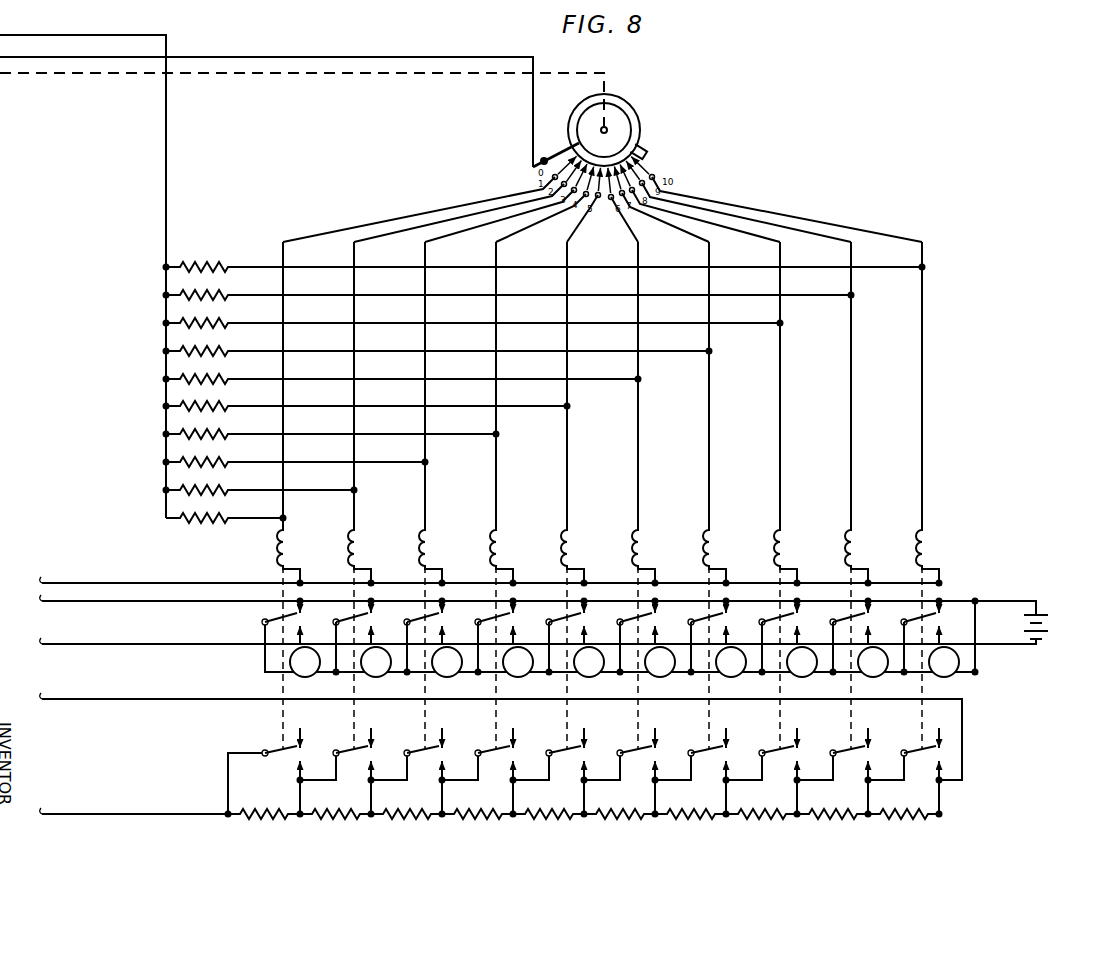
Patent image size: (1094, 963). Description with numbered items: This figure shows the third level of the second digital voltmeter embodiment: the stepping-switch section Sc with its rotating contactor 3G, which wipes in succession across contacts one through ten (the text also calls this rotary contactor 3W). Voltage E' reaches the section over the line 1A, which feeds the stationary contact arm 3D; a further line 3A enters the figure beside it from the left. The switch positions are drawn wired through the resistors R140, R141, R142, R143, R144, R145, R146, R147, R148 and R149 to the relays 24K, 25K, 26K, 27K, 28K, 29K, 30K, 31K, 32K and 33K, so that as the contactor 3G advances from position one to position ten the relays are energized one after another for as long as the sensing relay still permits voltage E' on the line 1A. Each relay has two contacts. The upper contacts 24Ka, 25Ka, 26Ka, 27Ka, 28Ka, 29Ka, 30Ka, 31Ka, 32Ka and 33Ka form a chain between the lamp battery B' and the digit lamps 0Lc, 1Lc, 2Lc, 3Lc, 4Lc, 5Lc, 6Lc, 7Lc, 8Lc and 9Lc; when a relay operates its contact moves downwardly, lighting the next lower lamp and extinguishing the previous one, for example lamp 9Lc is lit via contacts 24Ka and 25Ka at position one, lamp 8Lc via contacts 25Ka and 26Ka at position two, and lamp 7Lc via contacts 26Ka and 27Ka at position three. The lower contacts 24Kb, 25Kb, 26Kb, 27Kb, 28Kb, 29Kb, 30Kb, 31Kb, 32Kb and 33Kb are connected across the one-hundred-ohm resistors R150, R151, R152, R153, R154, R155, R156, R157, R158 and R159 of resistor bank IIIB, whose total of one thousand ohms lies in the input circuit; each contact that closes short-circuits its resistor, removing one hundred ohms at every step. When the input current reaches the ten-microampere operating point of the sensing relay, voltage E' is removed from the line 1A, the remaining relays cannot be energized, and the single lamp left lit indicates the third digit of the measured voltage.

The supply line 3A is at (159, 35).
The line 1A is at (301, 58).
The rotating contactor 3G is at (587, 103).
The switch section Sc is at (620, 96).
The rotary contactor 3W is at (640, 125).
The stationary contact arm 3D is at (564, 149).
The resistor R140 is at (544, 260).
The resistor R141 is at (509, 288).
The resistor R142 is at (473, 316).
The resistor R143 is at (438, 344).
The resistor R144 is at (402, 372).
The resistor R145 is at (367, 399).
The resistor R146 is at (331, 427).
The resistor R147 is at (296, 455).
The resistor R148 is at (260, 483).
The resistor R149 is at (226, 511).
The relay 24K is at (288, 531).
The relay 25K is at (359, 531).
The relay 26K is at (430, 531).
The relay 27K is at (501, 531).
The relay 28K is at (572, 531).
The relay 29K is at (643, 531).
The relay 30K is at (714, 531).
The relay 31K is at (785, 531).
The relay 32K is at (856, 531).
The relay 33K is at (927, 531).
The relay contact 24Ka is at (281, 611).
The relay contact 25Ka is at (365, 611).
The relay contact 26Ka is at (436, 611).
The relay contact 27Ka is at (507, 611).
The relay contact 28Ka is at (578, 611).
The relay contact 29Ka is at (649, 611).
The relay contact 30Ka is at (720, 611).
The relay contact 31Ka is at (791, 611).
The relay contact 32Ka is at (862, 611).
The relay contact 33Ka is at (933, 611).
The relay contact 24Kb is at (280, 746).
The relay contact 25Kb is at (366, 746).
The relay contact 26Kb is at (437, 746).
The relay contact 27Kb is at (508, 746).
The relay contact 28Kb is at (579, 746).
The relay contact 29Kb is at (650, 746).
The relay contact 30Kb is at (721, 746).
The relay contact 31Kb is at (792, 746).
The relay contact 32Kb is at (863, 746).
The relay contact 33Kb is at (934, 746).
The zero lamp 0Lc is at (297, 676).
The one lamp 1Lc is at (368, 676).
The two lamp 2Lc is at (439, 676).
The three lamp 3Lc is at (510, 676).
The four lamp 4Lc is at (581, 676).
The five lamp 5Lc is at (652, 676).
The six lamp 6Lc is at (723, 676).
The seven lamp 7Lc is at (794, 676).
The eight lamp 8Lc is at (865, 676).
The nine lamp 9Lc is at (936, 676).
The resistor R150 is at (290, 820).
The resistor R151 is at (362, 820).
The resistor R152 is at (433, 820).
The resistor R153 is at (504, 820).
The resistor R154 is at (575, 820).
The resistor R155 is at (646, 820).
The resistor R156 is at (717, 820).
The resistor R157 is at (788, 820).
The resistor R158 is at (859, 820).
The resistor R159 is at (930, 820).
The lamp battery B' is at (1050, 611).
The resistor bank IIIB is at (217, 827).